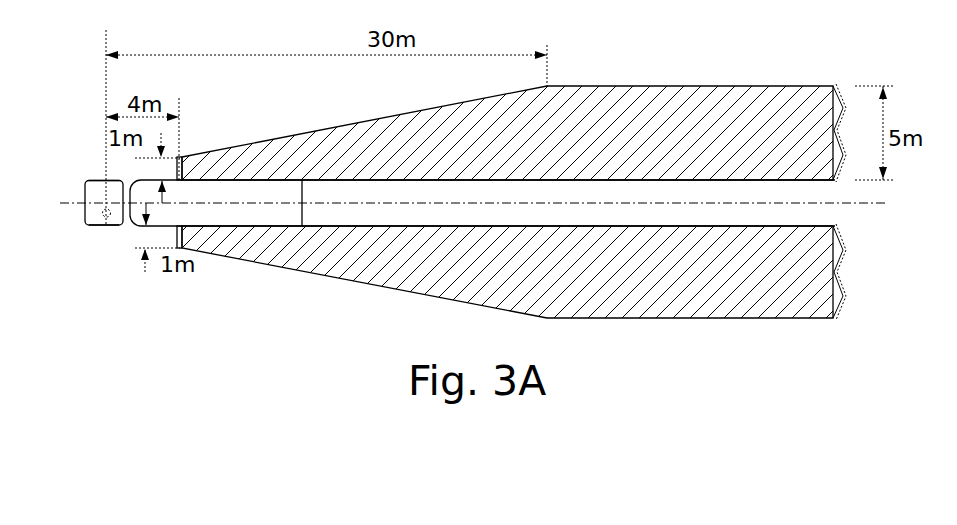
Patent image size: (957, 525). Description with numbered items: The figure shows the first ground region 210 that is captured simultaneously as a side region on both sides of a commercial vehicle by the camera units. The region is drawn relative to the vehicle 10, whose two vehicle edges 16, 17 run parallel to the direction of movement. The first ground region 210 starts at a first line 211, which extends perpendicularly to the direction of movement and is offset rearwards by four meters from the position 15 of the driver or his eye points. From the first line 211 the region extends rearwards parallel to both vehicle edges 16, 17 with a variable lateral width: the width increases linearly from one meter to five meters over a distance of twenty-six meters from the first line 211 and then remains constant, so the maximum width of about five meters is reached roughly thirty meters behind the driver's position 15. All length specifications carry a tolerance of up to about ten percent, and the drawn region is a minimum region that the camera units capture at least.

The sensor module 10 is at (96, 227).
The position of a driver 15 is at (118, 226).
The vehicle edge 16 is at (84, 175).
The vehicle edge 17 is at (78, 227).
The first ground region 210 is at (720, 86).
The first line 211 is at (182, 122).